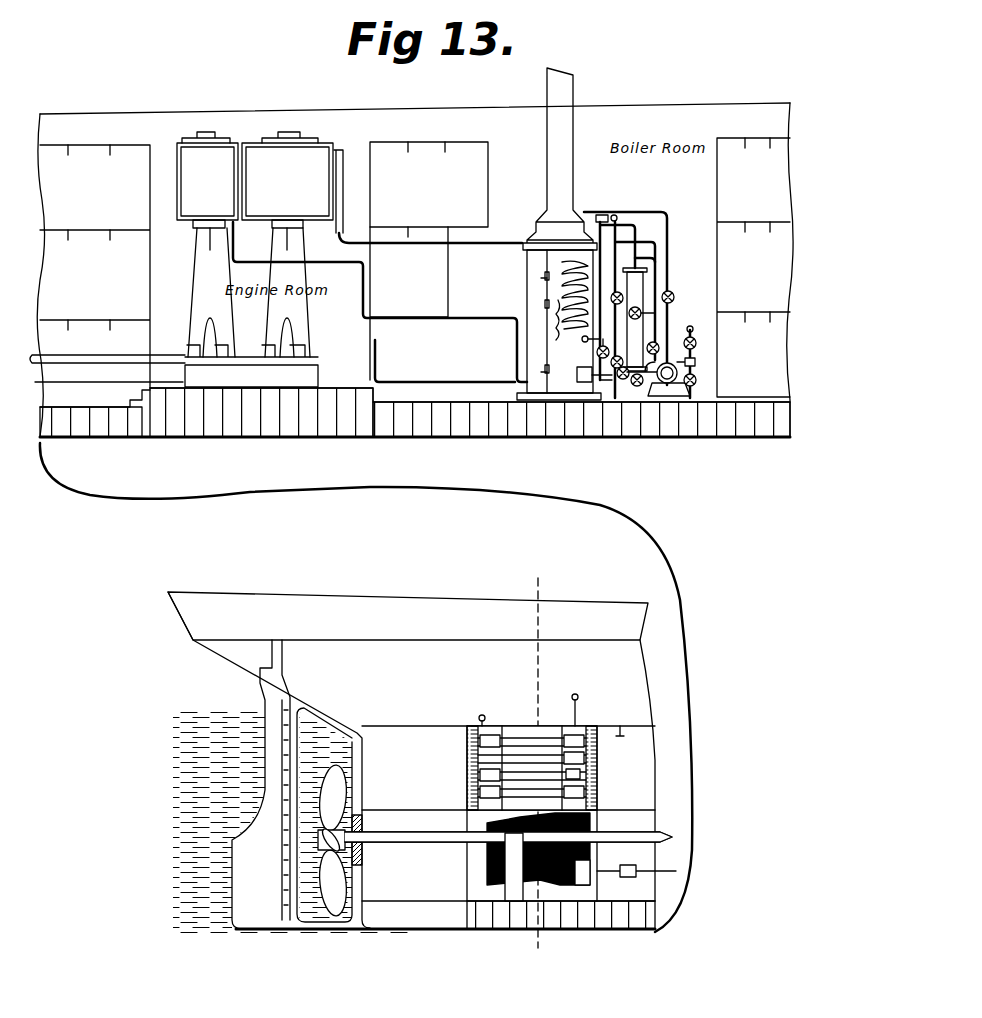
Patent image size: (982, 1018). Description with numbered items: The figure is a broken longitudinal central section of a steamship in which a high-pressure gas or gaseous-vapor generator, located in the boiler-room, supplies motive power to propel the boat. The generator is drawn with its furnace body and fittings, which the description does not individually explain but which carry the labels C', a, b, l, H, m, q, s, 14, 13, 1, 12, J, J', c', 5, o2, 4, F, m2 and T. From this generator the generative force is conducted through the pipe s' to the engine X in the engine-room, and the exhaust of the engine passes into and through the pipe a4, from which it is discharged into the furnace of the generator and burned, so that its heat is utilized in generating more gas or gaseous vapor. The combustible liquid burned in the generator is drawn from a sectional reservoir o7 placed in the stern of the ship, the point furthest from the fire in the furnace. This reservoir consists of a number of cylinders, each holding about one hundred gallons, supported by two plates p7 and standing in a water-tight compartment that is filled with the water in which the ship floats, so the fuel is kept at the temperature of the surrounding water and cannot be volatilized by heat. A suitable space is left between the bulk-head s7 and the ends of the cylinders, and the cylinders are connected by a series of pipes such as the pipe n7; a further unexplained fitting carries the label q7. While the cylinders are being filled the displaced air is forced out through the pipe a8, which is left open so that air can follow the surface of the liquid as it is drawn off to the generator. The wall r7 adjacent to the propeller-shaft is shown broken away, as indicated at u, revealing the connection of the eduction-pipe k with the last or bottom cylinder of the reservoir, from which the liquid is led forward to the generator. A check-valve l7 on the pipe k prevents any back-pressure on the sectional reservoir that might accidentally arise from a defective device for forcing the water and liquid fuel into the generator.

The engine X is at (260, 182).
The exhaust pipe a4 is at (380, 302).
The pipe s' is at (430, 242).
The eduction-pipe k is at (107, 369).
The boiler C' is at (559, 234).
The boiler doors a is at (560, 325).
The heating coil b is at (574, 298).
The water pipe l is at (630, 291).
The heater H is at (635, 319).
The pipe fitting m is at (615, 297).
The feed pipe q is at (635, 310).
The pipe s is at (660, 254).
The valve 14 is at (618, 293).
The valve 13 is at (642, 307).
The valve 1 is at (673, 296).
The valve 12 is at (588, 347).
The pump J is at (672, 372).
The pump base J' is at (669, 390).
The pipe connection c' is at (695, 360).
The valve 5 is at (694, 344).
The tee fitting o2 is at (697, 362).
The valve 4 is at (694, 387).
The gauge box F is at (594, 374).
The pipe branch m2 is at (603, 386).
The floor frames T is at (415, 412).
The broken-away portion u is at (494, 840).
The bulk-head s7 is at (539, 768).
The sectional reservoir o7 is at (532, 799).
The supporting plates p7 is at (532, 766).
The tube fitting q7 is at (573, 788).
The connecting pipe n7 is at (489, 716).
The air pipe a8 is at (584, 710).
The wall r7 is at (508, 857).
The check-valve l7 is at (565, 820).